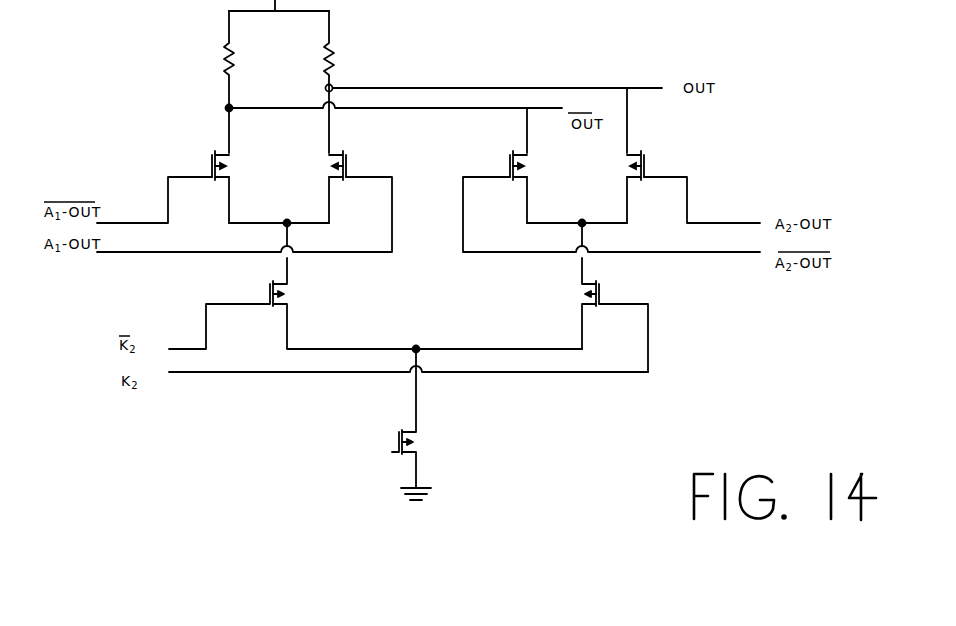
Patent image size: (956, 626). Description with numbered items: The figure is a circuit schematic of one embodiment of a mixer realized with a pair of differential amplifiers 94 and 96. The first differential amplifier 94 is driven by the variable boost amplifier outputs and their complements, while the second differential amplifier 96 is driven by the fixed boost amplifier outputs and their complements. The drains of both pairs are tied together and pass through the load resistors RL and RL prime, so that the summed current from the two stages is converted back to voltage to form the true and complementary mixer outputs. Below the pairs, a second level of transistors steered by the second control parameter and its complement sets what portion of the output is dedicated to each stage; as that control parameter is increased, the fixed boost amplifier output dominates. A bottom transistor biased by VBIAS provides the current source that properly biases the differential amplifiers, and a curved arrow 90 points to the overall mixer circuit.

The differential amplifier 94 is at (286, 184).
The differential amplifier 96 is at (585, 184).
The latch circuit (pointed to by arrow; numeral off-sheet) 90 is at (785, 0).
The load resistor RL is at (294, 82).
The bias voltage VBIAS is at (374, 424).